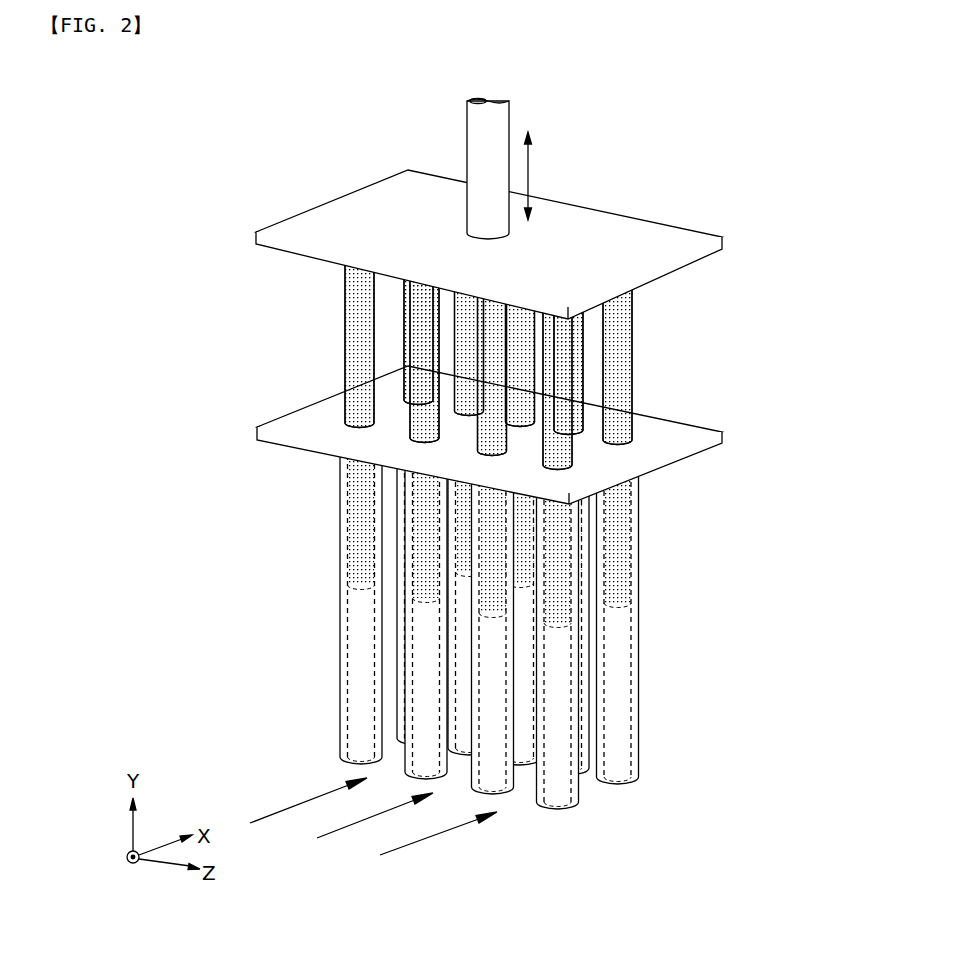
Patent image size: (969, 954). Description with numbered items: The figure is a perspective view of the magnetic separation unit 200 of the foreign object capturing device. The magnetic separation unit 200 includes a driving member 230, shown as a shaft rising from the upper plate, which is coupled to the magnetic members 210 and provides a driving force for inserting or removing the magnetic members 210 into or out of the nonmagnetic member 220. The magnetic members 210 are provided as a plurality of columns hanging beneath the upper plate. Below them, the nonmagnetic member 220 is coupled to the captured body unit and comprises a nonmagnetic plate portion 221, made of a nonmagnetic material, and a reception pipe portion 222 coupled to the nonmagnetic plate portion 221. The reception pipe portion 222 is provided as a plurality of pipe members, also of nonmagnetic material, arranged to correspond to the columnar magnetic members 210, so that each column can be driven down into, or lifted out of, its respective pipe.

The magnetic separation unit 200 is at (103, 463).
The magnetic members 210 is at (355, 305).
The nonmagnetic member 220 is at (155, 407).
The nonmagnetic plate portion 221 is at (257, 433).
The reception pipe portion 222 is at (340, 608).
The driving member 230 is at (485, 193).